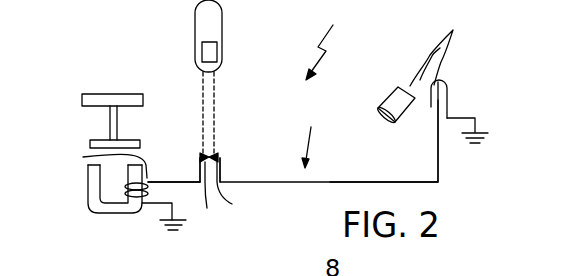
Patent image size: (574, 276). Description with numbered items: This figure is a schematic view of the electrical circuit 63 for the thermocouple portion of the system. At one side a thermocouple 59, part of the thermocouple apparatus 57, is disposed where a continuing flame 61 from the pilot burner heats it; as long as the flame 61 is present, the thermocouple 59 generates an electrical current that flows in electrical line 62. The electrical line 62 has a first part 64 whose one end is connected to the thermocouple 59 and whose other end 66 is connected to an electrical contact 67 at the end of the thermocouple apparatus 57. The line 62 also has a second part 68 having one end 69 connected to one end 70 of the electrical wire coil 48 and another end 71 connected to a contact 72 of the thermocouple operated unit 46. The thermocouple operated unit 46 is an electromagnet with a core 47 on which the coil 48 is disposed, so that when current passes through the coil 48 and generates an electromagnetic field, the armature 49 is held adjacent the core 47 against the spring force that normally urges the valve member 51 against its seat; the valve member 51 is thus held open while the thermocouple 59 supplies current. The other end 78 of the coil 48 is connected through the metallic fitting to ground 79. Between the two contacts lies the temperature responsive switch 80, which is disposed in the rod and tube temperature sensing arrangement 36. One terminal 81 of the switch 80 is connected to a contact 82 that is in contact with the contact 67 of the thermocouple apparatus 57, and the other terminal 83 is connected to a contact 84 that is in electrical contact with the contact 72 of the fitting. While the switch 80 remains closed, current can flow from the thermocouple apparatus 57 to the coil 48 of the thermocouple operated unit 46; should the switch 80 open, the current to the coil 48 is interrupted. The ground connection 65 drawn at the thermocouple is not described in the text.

The rod and tube temperature sensing arrangement 36 is at (223, 22).
The temperature responsive switch 80 is at (200, 52).
The terminal 83 is at (202, 91).
The terminal 81 is at (215, 82).
The valve member 51 is at (90, 102).
The armature 49 is at (90, 145).
The thermocouple operated unit 46 is at (97, 192).
The core 47 is at (87, 211).
The electrical wire coil 48 is at (130, 188).
The end of second part 69 is at (143, 185).
The end of coil 70 is at (84, 192).
The other end of coil 78 is at (147, 203).
The ground 79 is at (183, 231).
The electrical line 62 is at (277, 183).
The second part of electrical line 68 is at (181, 183).
The first part of electrical line 64 is at (358, 180).
The end of second part 71 is at (199, 168).
The contact 72 is at (211, 151).
The electrical contact 67 is at (220, 156).
The end of first part 66 is at (222, 167).
The contact 84 is at (215, 199).
The contact 82 is at (243, 190).
The thermocouple apparatus 57 is at (317, 134).
The circuit 63 is at (329, 43).
The flame 61 is at (445, 58).
The thermocouple 59 is at (448, 84).
The ground connection 65 is at (443, 97).